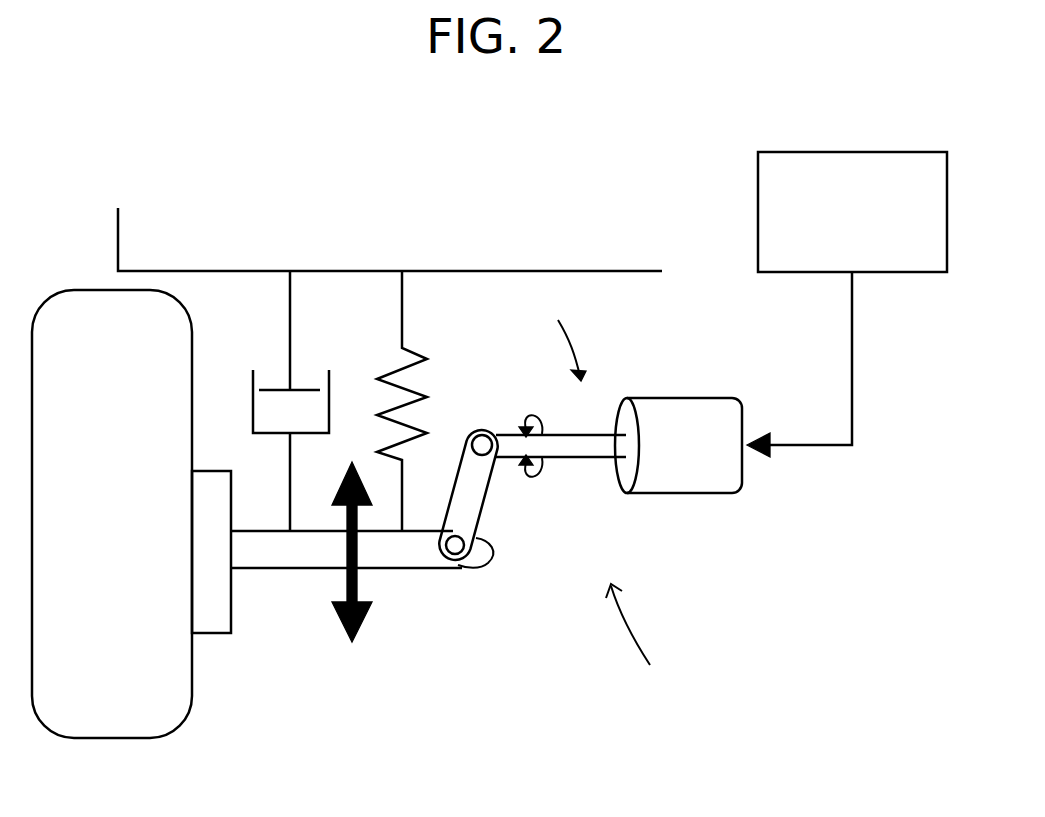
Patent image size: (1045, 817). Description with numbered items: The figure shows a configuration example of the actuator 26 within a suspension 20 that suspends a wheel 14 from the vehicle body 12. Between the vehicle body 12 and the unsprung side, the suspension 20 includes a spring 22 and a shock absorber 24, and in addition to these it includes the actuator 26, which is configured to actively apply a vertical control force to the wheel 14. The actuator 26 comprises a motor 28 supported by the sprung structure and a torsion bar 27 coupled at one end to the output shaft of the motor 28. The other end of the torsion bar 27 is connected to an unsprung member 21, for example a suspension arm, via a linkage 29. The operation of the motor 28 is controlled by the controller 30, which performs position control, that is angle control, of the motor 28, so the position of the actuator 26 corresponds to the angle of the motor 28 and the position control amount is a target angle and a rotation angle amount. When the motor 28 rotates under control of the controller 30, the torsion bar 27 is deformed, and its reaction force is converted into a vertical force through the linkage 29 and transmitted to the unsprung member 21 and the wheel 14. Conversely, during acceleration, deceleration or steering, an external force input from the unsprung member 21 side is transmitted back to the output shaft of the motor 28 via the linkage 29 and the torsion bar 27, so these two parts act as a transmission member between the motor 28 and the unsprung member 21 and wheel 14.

The vehicle body 12 is at (383, 250).
The wheel 14 is at (90, 290).
The suspension 20 is at (648, 639).
The unsprung member 21 is at (420, 571).
The spring 22 is at (404, 344).
The shock absorber 24 is at (292, 342).
The actuator 26 is at (552, 339).
The torsion bar 27 is at (587, 460).
The motor 28 is at (672, 398).
The linkage 29 is at (488, 498).
The controller 30 is at (862, 152).